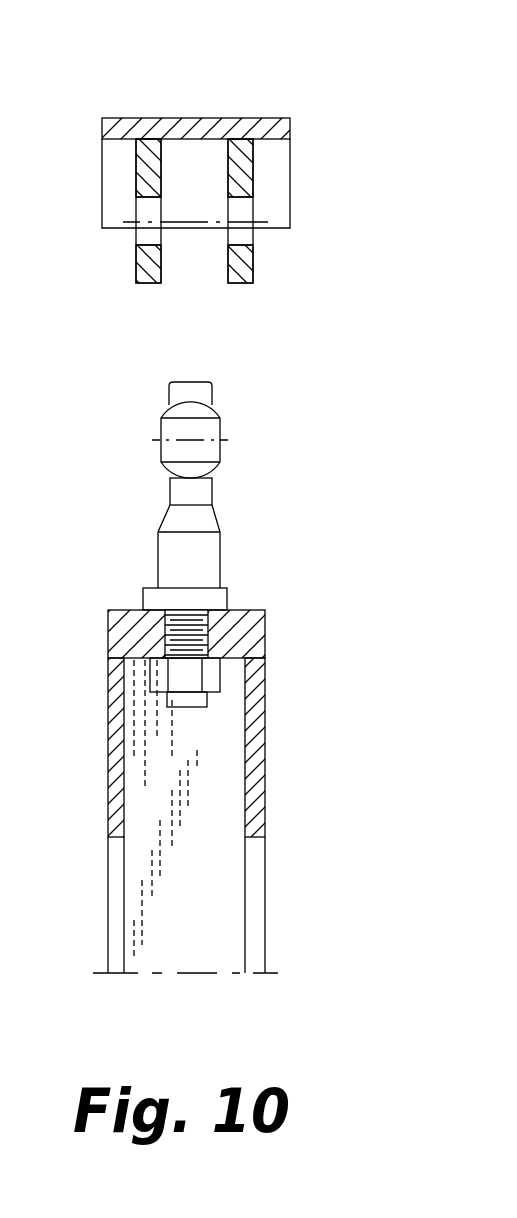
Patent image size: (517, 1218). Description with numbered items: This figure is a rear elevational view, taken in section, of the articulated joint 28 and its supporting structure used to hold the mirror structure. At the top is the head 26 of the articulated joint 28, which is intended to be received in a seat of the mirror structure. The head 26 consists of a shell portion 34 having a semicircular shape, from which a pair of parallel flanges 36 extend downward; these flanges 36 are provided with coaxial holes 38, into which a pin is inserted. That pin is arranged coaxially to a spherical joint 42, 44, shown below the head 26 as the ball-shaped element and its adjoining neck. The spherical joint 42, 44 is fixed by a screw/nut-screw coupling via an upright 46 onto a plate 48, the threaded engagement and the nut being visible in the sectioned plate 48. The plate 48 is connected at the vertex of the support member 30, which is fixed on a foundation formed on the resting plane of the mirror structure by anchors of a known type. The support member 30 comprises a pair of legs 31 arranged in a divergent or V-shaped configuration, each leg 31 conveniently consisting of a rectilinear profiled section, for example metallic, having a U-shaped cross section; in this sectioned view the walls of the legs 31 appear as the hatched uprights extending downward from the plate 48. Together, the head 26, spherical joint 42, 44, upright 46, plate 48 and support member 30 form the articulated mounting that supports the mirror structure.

The head 26 is at (194, 157).
The articulated joint 28 is at (190, 439).
The support member 30 is at (180, 765).
The leg 31 is at (247, 806).
The shell portion 34 is at (176, 128).
The flange 36 is at (146, 166).
The hole 38 is at (149, 201).
The spherical joint 42 is at (192, 412).
The spherical joint 44 is at (192, 469).
The upright 46 is at (179, 516).
The plate 48 is at (232, 636).